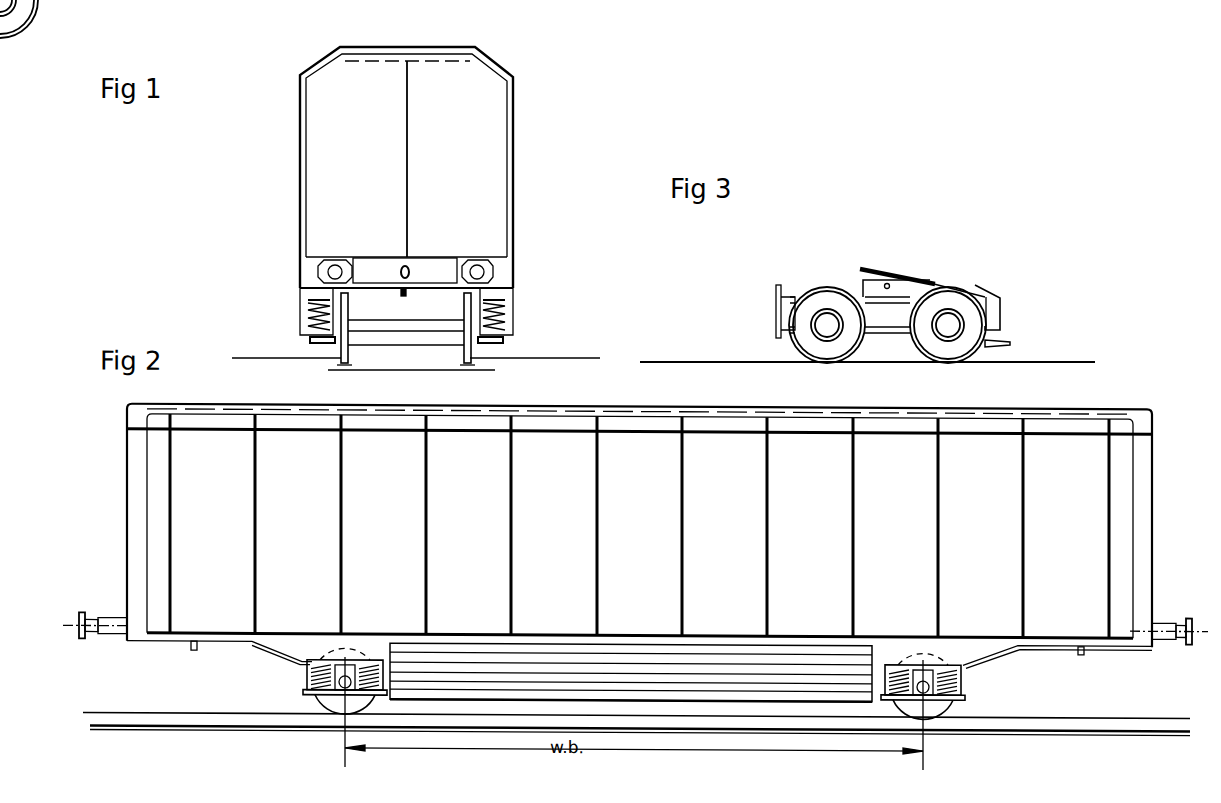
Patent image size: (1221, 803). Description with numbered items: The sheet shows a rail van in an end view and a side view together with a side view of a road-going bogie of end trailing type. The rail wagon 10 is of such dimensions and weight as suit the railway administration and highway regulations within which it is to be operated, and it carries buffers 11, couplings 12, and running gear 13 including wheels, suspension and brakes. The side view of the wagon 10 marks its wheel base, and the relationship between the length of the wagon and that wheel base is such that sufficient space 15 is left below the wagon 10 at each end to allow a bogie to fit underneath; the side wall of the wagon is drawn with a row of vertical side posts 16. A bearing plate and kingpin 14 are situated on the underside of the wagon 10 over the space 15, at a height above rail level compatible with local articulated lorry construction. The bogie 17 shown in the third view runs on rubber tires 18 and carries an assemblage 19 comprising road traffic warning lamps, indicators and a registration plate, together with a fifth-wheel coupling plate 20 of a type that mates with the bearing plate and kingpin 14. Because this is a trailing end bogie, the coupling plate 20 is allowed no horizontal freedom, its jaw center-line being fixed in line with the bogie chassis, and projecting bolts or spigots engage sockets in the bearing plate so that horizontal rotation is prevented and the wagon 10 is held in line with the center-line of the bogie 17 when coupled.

In FIG. 1, the rail wagon 10 is at (300, 143).
In FIG. 2, the rail wagon 10 is at (127, 482).
In FIG. 1, the buffers 11 is at (318, 268).
In FIG. 2, the buffers 11 is at (113, 640).
In FIG. 1, the couplings 12 is at (410, 270).
In FIG. 1, the running gear 13 is at (490, 356).
In FIG. 1, the bearing plate and kingpin 14 is at (401, 292).
In FIG. 2, the bearing plate and kingpin 14 is at (194, 648).
In FIG. 2, the space 15 is at (258, 680).
In FIG. 2, the side post 16 is at (808, 508).
In FIG. 3, the bogie 17 is at (998, 305).
In FIG. 3, the rubber tires 18 is at (1010, 343).
In FIG. 3, the assemblage 19 is at (776, 313).
In FIG. 3, the fifth-wheel coupling plate 20 is at (893, 274).